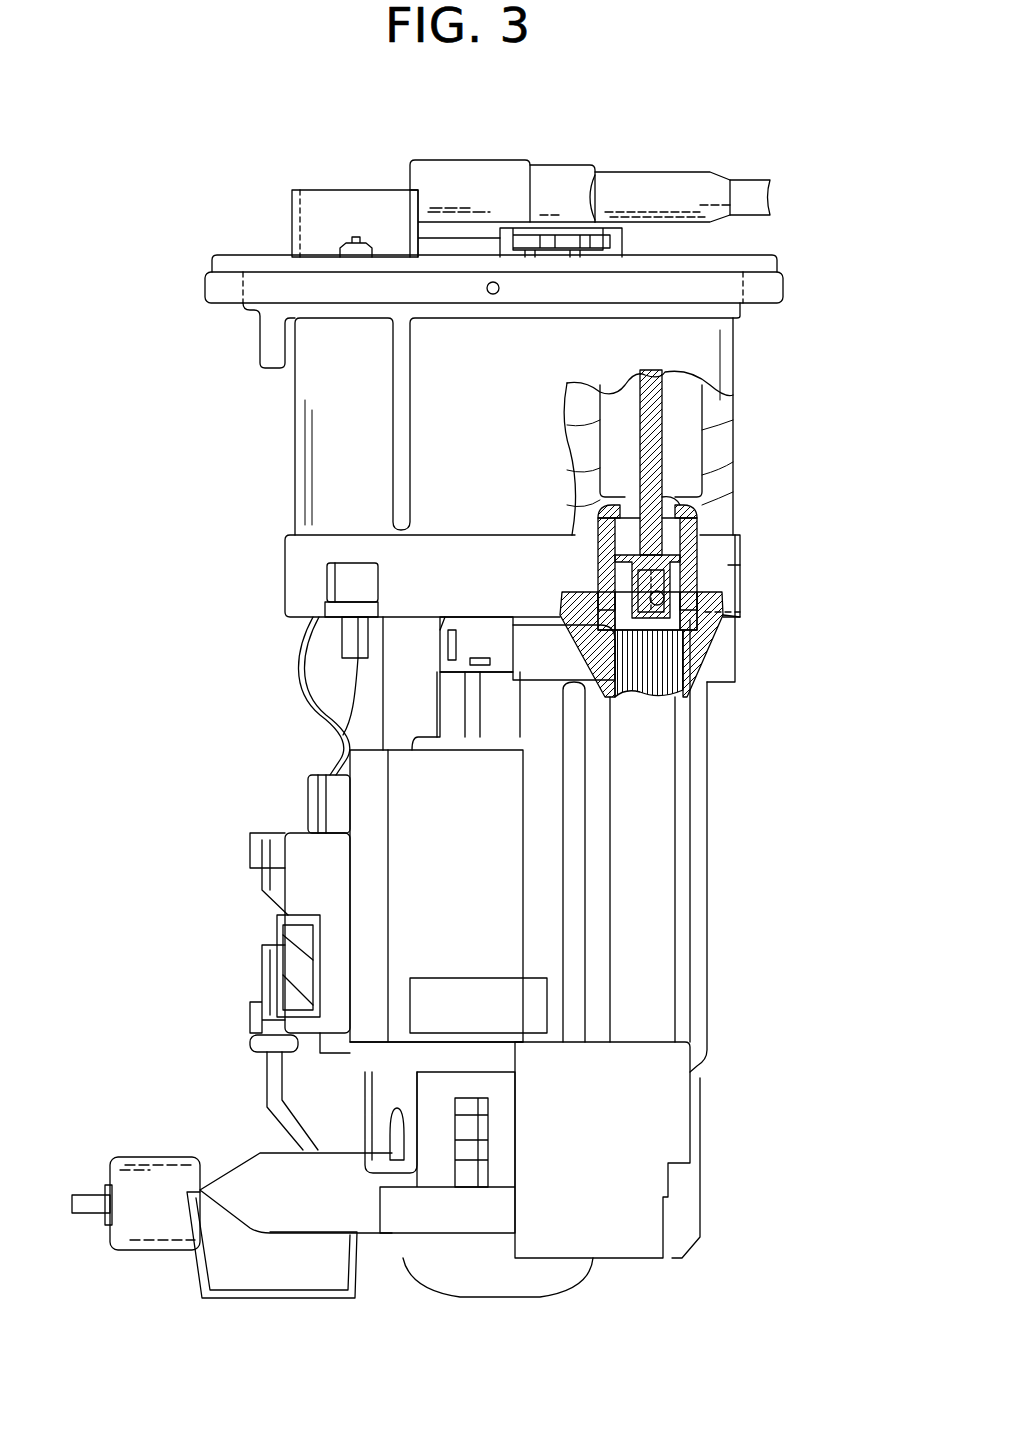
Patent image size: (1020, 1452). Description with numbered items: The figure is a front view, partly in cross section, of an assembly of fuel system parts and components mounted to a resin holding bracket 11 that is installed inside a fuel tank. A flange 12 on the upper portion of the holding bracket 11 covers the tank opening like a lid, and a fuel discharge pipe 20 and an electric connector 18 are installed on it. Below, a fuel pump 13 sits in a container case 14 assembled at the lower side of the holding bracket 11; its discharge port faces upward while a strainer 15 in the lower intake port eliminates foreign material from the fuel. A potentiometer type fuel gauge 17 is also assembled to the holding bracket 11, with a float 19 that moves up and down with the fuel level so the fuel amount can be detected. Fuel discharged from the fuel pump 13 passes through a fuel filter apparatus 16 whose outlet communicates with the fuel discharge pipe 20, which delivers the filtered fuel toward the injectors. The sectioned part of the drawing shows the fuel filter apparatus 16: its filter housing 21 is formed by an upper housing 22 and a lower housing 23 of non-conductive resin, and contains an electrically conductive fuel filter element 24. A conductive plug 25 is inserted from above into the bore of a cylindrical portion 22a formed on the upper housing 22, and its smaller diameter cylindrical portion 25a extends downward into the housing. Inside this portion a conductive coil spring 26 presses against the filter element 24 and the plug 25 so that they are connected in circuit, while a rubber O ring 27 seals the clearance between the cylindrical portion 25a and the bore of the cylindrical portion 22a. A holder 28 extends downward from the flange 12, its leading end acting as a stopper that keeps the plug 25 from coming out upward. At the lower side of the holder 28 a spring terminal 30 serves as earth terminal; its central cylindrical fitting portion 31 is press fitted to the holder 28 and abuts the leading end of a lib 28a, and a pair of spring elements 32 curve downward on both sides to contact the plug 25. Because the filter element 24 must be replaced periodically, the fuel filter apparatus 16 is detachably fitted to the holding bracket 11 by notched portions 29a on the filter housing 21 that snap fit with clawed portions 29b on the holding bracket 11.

The holding bracket 11 is at (742, 388).
The flange 12 is at (750, 257).
The fuel pump 13 is at (437, 742).
The container case 14 is at (437, 840).
The strainer 15 is at (290, 1275).
The fuel filter apparatus 16 is at (722, 703).
The fuel gauge 17 is at (265, 913).
The electric connector 18 is at (335, 190).
The float 19 is at (143, 1173).
The fuel discharge pipe 20 is at (655, 190).
The filter housing 21 is at (728, 637).
The upper housing 22 is at (745, 600).
The cylindrical portion 22a is at (728, 565).
The lower housing 23 is at (700, 650).
The fuel filter element 24 is at (655, 698).
The conductive plug 25 is at (705, 522).
The smaller diameter cylindrical portion 25a is at (600, 578).
The conductive coil spring 26 is at (742, 613).
The rubber O ring 27 is at (605, 560).
The holder 28 is at (640, 430).
The lib 28a is at (600, 480).
The notched portions 29a is at (325, 592).
The clawed portions 29b is at (355, 578).
The spring terminal 30 is at (705, 496).
The cylindrical fitting portion 31 is at (605, 512).
The spring elements 32 is at (700, 512).